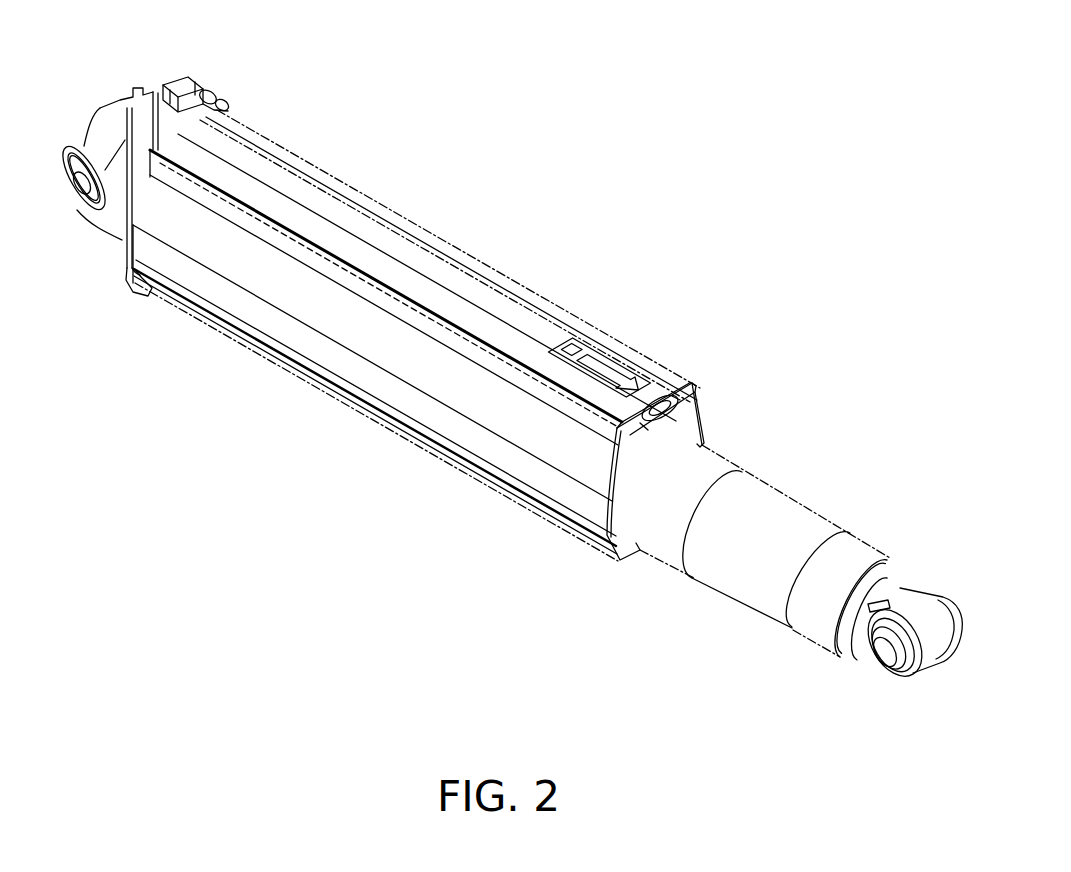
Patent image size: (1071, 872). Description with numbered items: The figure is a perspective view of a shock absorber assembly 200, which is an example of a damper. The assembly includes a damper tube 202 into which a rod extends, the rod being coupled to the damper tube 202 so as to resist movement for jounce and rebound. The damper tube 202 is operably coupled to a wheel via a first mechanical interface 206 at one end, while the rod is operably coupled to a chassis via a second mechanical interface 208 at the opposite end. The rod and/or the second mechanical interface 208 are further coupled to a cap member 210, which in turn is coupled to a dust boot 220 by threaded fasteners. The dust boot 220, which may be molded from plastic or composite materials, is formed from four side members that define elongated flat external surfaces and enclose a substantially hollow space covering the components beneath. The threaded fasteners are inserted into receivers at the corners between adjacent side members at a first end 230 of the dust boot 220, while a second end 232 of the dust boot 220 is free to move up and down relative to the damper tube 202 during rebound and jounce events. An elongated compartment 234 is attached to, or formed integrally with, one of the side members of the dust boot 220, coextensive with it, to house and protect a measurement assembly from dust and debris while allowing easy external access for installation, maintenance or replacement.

The shock absorber assembly 200 is at (503, 384).
The damper tube 202 is at (767, 591).
The first mechanical interface 206 is at (892, 683).
The second mechanical interface 208 is at (83, 147).
The cap member 210 is at (119, 232).
The dust boot 220 is at (416, 326).
The first end 230 is at (228, 112).
The second end 232 is at (703, 417).
The elongated compartment 234 is at (385, 242).